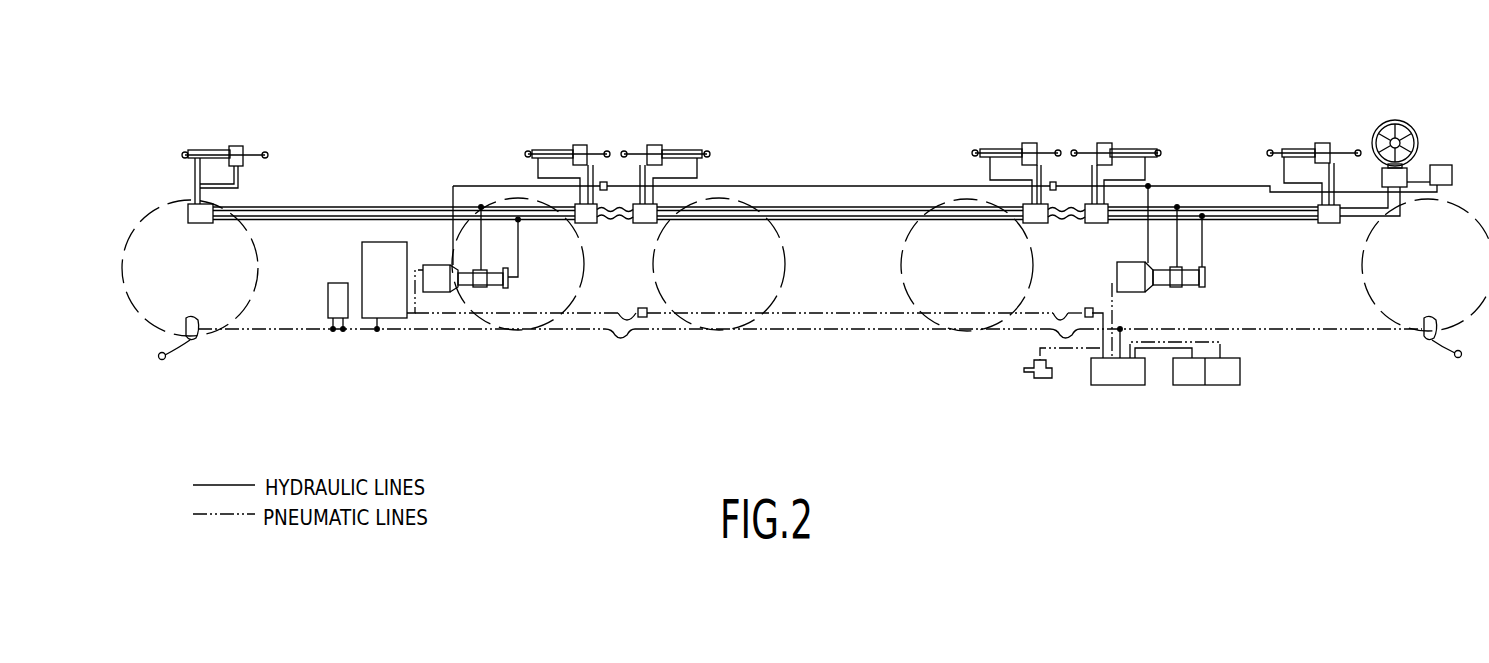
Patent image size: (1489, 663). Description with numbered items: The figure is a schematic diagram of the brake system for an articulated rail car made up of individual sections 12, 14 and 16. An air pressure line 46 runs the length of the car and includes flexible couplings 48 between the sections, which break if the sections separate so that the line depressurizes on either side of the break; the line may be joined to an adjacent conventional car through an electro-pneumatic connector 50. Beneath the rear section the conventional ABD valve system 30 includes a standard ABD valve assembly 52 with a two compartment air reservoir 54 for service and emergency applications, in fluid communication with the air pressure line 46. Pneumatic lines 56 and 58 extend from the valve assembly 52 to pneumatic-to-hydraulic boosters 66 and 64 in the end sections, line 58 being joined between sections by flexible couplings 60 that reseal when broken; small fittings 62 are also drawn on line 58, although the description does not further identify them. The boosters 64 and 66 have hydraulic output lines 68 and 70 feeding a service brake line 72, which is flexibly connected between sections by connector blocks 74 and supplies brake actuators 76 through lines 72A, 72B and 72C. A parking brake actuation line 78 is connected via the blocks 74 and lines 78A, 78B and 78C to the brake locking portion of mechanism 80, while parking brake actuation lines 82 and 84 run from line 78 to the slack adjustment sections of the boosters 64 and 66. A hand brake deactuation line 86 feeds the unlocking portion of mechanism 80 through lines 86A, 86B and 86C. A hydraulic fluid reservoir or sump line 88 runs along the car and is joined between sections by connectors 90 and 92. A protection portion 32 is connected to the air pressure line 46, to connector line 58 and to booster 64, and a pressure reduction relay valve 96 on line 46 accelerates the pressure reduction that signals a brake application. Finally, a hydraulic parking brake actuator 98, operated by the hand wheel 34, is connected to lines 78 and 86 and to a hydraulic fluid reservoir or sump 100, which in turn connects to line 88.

The section 12 is at (364, 380).
The section 14 is at (849, 375).
The section 16 is at (1317, 381).
The ABD valve system 30 is at (1157, 392).
The protection portion 32 is at (393, 290).
The hand wheel 34 is at (1397, 121).
The air pressure line 46 is at (430, 331).
The flexible couplings 48 is at (616, 337).
The electro-pneumatic connector 50 is at (197, 321).
The ABD valve assembly 52 is at (1105, 380).
The two compartment air reservoir 54 is at (1240, 363).
The pneumatic line 56 is at (1113, 283).
The pneumatic line 58 is at (583, 313).
The flexible couplings 60 is at (623, 312).
The valve 62 is at (650, 311).
The pneumatic-to-hydraulic booster 64 is at (497, 284).
The pneumatic-to-hydraulic booster 66 is at (1142, 290).
The hydraulic output line 68 is at (519, 237).
The hydraulic output line 70 is at (1203, 250).
The service brake line 72 is at (293, 221).
The line 72A is at (195, 172).
The line 72B is at (708, 157).
The line 72C is at (1157, 158).
The connector blocks 74 is at (575, 206).
The brake actuators 76 is at (206, 150).
The parking brake actuation line 78 is at (368, 207).
The line 78A is at (238, 188).
The line 78B is at (640, 223).
The line 78C is at (1135, 182).
The brake locking mechanism 80 is at (243, 148).
The parking brake actuation line 82 is at (483, 236).
The parking brake actuation line 84 is at (1178, 236).
The hand brake deactuation line 86 is at (392, 210).
The line 86A is at (193, 208).
The line 86B is at (658, 220).
The line 86C is at (1095, 165).
The hydraulic fluid reservoir or sump line 88 is at (453, 186).
The connector 90 is at (453, 230).
The connector 92 is at (1070, 180).
The pressure reduction relay valve 96 is at (328, 293).
The hydraulic parking brake actuator 98 is at (1383, 162).
The hydraulic fluid reservoir or sump 100 is at (1445, 165).